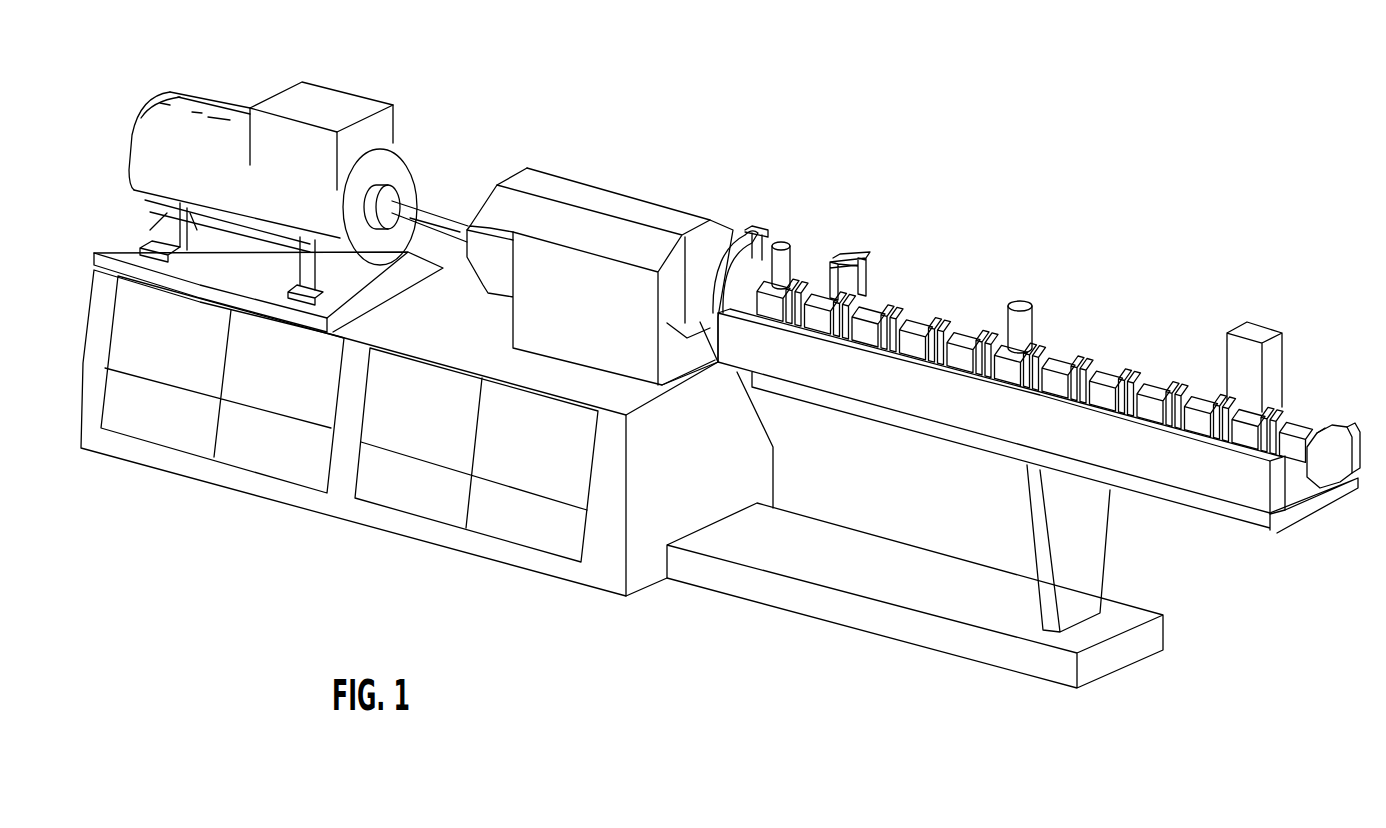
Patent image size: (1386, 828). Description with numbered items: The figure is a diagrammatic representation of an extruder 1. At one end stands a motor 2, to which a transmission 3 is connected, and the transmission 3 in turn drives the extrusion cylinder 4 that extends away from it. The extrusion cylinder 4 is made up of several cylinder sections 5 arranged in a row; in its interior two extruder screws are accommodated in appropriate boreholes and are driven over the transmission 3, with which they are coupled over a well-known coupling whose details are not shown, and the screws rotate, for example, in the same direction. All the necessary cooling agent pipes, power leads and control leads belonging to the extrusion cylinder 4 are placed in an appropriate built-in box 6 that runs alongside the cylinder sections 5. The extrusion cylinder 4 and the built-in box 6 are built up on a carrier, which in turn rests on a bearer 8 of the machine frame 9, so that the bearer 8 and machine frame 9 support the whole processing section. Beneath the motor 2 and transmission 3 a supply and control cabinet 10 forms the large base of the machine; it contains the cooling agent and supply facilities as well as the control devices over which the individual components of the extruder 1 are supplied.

The extruder 1 is at (1073, 113).
The motor 2 is at (347, 102).
The transmission 3 is at (598, 192).
The extrusion cylinder 4 is at (1108, 333).
The cylinder sections 5 is at (885, 307).
The built-in box 6 is at (950, 408).
The bearer 8 is at (1098, 538).
The machine frame 9 is at (940, 643).
The supply and control cabinet 10 is at (416, 502).